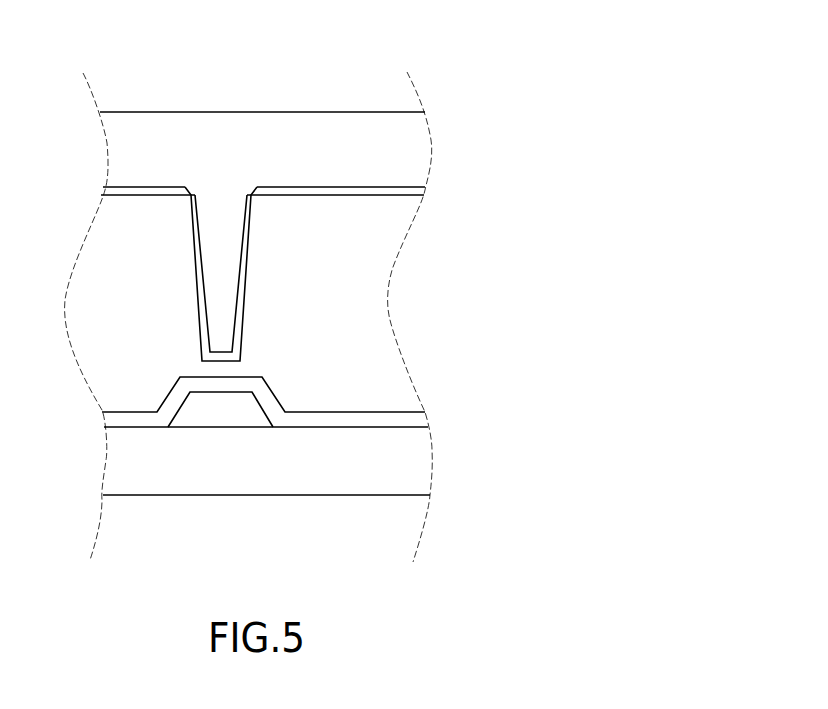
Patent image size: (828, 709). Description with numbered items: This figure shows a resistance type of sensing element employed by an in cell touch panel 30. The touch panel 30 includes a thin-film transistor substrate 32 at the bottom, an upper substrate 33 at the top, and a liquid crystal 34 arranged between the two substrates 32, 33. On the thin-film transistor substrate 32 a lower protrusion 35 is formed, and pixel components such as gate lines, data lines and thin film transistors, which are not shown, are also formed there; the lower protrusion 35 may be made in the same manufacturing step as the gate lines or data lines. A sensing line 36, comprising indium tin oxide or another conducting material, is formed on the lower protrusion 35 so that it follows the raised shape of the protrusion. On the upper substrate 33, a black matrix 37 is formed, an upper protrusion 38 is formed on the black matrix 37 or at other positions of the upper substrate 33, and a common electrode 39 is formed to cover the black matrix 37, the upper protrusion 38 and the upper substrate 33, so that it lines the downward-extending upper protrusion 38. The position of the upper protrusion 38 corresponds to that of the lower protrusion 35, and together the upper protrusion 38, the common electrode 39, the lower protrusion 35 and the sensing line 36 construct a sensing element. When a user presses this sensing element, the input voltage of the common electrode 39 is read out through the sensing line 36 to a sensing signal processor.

The touch panel 30 is at (50, 38).
The thin-film transistor substrate 32 is at (370, 463).
The upper substrate 33 is at (388, 155).
The liquid crystal 34 is at (370, 267).
The lower protrusion 35 is at (218, 413).
The sensing line 36 is at (263, 397).
The black matrix 37 is at (235, 190).
The upper protrusion 38 is at (220, 207).
The common electrode 39 is at (160, 192).